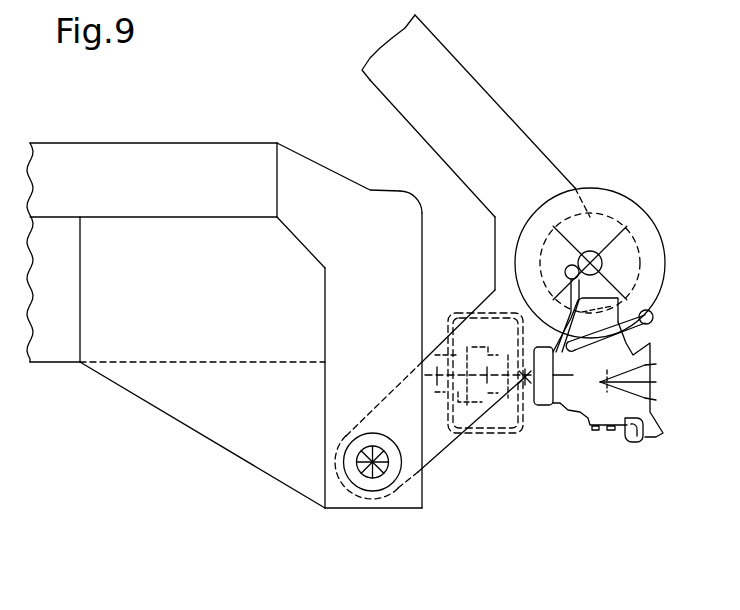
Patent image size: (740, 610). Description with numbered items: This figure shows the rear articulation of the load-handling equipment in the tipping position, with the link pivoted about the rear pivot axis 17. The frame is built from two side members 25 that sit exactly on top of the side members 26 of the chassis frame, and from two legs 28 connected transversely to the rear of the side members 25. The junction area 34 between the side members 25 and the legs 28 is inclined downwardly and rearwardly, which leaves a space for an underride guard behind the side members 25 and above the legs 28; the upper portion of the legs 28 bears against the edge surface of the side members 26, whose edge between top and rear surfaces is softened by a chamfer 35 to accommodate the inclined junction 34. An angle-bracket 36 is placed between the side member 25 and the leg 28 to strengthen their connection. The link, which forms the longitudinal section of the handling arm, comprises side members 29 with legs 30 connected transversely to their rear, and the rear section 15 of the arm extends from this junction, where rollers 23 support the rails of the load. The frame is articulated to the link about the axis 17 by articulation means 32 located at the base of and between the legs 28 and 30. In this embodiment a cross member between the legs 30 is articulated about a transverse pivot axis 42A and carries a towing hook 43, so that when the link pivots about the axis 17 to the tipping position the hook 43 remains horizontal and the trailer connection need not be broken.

The rear section 15 is at (554, 498).
The rear pivot axis 17 is at (370, 465).
The rollers 23 is at (647, 223).
The side members 25 is at (113, 160).
The side members of the chassis frame 26 is at (53, 352).
The legs 28 is at (332, 299).
The side members 29 is at (468, 88).
The legs 30 is at (440, 443).
The articulation means 32 is at (377, 508).
The junction area 34 is at (300, 173).
The chamfer 35 is at (308, 232).
The angle-bracket 36 is at (213, 430).
The transverse pivot axis 42A is at (528, 402).
The towing hook 43 is at (598, 432).